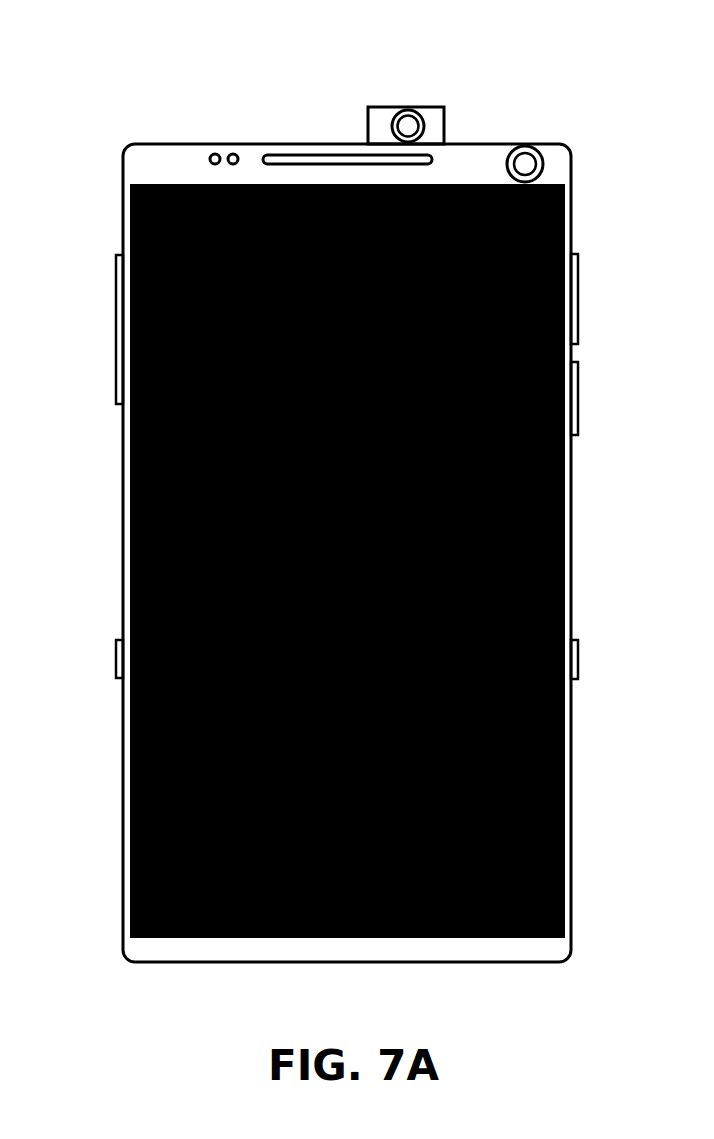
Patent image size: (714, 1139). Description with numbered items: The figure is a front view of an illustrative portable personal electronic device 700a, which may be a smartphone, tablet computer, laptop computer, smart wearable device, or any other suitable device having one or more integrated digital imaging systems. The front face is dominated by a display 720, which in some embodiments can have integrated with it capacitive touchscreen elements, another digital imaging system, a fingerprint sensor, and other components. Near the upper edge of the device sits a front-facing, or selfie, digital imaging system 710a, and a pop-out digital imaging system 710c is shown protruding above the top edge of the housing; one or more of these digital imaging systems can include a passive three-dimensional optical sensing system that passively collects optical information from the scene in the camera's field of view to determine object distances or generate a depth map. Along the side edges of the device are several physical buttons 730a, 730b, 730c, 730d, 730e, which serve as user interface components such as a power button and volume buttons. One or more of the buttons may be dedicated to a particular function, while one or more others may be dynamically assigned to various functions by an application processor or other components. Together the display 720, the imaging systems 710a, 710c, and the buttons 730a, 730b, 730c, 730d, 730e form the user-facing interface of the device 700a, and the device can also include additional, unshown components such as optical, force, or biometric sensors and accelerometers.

The portable personal electronic device 700a is at (518, 62).
The front-facing digital imaging system 710a is at (532, 150).
The pop-out digital imaging system 710c is at (390, 107).
The display 720 is at (508, 870).
The physical button 730a is at (578, 300).
The physical button 730b is at (578, 397).
The physical button 730c is at (116, 318).
The physical button 730d is at (117, 660).
The physical button 730e is at (578, 660).